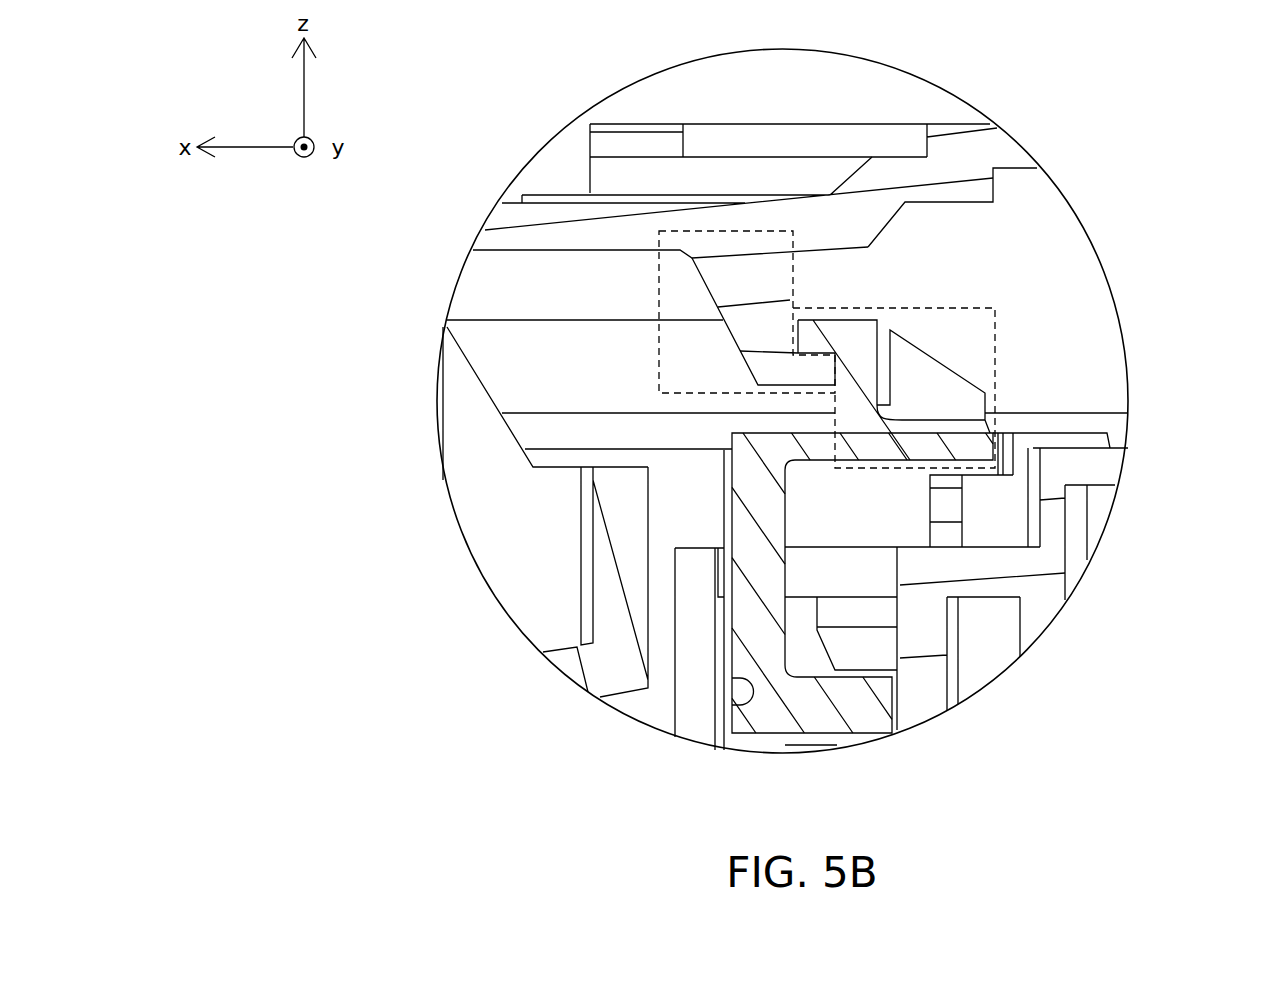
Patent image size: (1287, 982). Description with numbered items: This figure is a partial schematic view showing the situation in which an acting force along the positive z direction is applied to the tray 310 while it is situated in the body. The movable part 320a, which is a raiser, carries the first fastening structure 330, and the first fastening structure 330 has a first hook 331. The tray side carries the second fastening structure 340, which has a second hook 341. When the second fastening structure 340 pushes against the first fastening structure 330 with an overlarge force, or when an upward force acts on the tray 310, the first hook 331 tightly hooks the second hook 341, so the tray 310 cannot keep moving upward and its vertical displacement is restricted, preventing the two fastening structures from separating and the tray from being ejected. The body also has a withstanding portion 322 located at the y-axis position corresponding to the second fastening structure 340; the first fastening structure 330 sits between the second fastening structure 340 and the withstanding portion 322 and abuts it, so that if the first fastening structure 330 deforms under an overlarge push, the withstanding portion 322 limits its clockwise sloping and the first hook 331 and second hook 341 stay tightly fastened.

The tray 310 is at (697, 93).
The movable part 320a is at (763, 714).
The withstanding portion 322 is at (1007, 480).
The first fastening structure 330 is at (995, 388).
The first hook 331 is at (870, 328).
The second fastening structure 340 is at (659, 290).
The second hook 341 is at (793, 377).